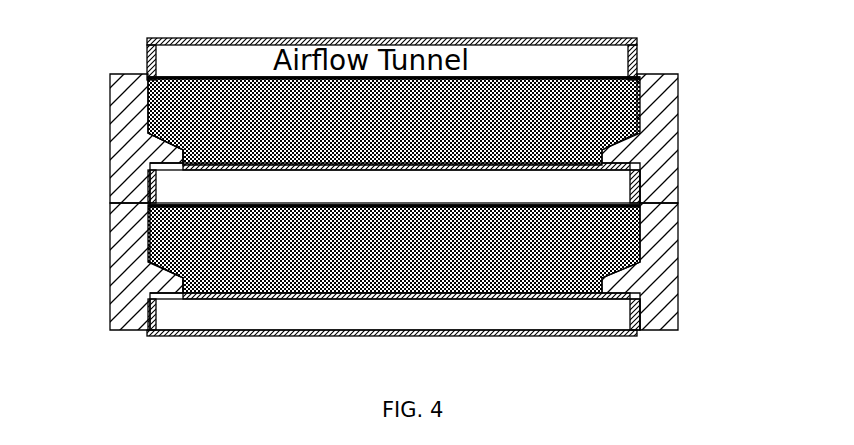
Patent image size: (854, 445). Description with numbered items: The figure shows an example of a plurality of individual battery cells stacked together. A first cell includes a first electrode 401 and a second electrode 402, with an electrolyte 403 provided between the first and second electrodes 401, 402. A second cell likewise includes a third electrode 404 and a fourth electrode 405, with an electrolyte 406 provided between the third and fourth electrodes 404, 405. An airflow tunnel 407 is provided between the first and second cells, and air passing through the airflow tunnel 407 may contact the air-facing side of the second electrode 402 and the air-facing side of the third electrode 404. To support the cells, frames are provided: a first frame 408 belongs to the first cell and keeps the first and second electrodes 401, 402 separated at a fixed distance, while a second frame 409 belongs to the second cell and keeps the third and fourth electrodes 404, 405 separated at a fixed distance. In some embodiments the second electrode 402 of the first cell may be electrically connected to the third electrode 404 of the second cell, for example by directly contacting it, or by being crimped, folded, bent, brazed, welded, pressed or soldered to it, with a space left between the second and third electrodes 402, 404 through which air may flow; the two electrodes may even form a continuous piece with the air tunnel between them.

The first electrode 401 is at (180, 80).
The second electrode 402 is at (150, 163).
The electrolyte 403 is at (394, 123).
The third electrode 404 is at (150, 212).
The fourth electrode 405 is at (140, 293).
The electrolyte 406 is at (394, 252).
The airflow tunnel 407 is at (394, 187).
The first frame 408 is at (442, 138).
The second frame 409 is at (442, 266).